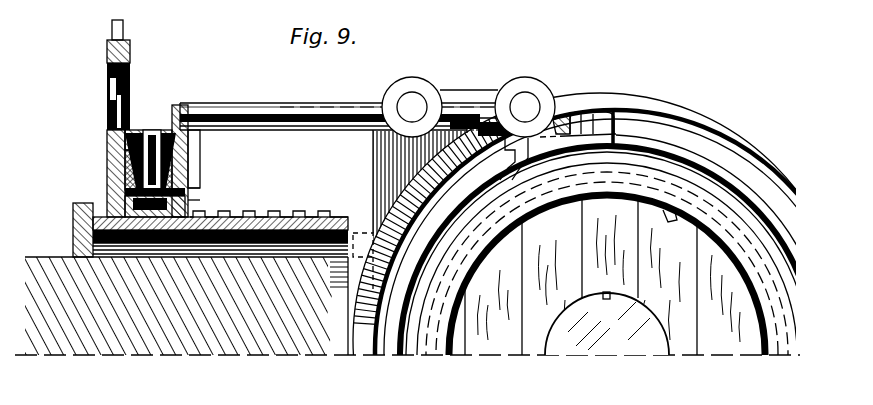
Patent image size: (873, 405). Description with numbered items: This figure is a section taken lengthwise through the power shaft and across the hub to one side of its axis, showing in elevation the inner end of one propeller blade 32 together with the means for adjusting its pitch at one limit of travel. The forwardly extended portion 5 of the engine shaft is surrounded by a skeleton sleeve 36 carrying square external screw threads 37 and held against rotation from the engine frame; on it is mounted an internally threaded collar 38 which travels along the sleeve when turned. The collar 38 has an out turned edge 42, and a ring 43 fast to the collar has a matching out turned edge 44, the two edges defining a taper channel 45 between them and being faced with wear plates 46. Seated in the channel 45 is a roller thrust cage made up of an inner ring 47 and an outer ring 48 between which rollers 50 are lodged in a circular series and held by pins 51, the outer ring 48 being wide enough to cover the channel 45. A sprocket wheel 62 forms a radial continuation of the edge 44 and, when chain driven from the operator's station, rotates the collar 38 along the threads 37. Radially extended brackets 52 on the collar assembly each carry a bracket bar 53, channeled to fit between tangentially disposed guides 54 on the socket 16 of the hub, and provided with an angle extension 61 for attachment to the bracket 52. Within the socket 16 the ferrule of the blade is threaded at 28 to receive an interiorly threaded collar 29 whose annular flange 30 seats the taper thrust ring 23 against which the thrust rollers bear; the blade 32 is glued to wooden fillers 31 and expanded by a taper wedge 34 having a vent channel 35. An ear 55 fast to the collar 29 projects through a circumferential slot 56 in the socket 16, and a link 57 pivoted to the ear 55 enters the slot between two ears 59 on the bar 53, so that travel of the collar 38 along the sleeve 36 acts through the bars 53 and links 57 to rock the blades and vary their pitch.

The portion of the engine shaft 5 is at (45, 275).
The socket 16 is at (365, 350).
The taper thrust ring 23 is at (727, 152).
The exterior threads of the ferrule 28 is at (427, 350).
The interiorly threaded collar 29 is at (673, 165).
The annular flange 30 is at (742, 167).
The filler 31 is at (682, 217).
The propeller blade 32 is at (607, 300).
The taper wedge 34 is at (645, 340).
The vent channel 35 is at (607, 300).
The skeleton sleeve 36 is at (263, 216).
The external screw threads 37 is at (323, 217).
The internally threaded collar 38 is at (143, 243).
The out turned edge 42 is at (192, 199).
The ring 43 is at (108, 201).
The out turned edge of the ring 44 is at (110, 170).
The taper channel 45 is at (124, 183).
The wear plates 46 is at (128, 152).
The inner ring of the thrust cage 47 is at (194, 184).
The outer ring of the thrust cage 48 is at (125, 133).
The rollers 50 is at (196, 150).
The pins 51 is at (150, 131).
The radially extended bracket 52 is at (177, 105).
The bracket bar 53 is at (338, 123).
The guides 54 is at (390, 164).
The ear 55 is at (543, 90).
The circumferential slot 56 is at (653, 108).
The link 57 is at (472, 96).
The ears 59 is at (407, 78).
The angle extension 61 is at (193, 137).
The sprocket wheel 62 is at (107, 53).